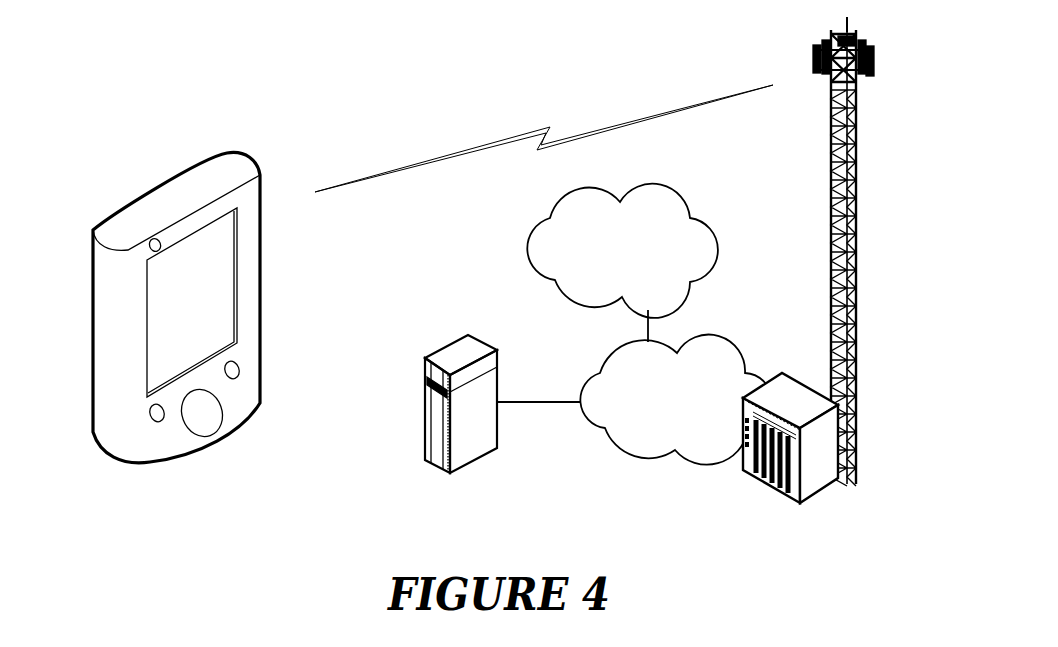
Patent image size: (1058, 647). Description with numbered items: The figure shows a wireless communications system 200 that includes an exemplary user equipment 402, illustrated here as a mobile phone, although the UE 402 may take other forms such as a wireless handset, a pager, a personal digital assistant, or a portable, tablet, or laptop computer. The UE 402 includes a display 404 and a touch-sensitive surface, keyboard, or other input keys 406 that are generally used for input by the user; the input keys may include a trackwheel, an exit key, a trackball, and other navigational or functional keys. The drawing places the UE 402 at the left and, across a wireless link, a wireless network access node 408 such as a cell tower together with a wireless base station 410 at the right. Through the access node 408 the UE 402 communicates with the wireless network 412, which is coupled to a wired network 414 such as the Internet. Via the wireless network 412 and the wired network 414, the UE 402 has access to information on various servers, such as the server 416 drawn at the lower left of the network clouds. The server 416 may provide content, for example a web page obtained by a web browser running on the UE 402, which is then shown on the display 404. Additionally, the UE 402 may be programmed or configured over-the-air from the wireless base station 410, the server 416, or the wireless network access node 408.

The communication system 200 is at (313, 110).
The user equipment 402 is at (175, 462).
The display 404 is at (262, 220).
The input keys 406 is at (263, 300).
The wireless network access node 408 is at (858, 475).
The wireless base station 410 is at (760, 483).
The wireless network 412 is at (676, 400).
The wired network 414 is at (622, 251).
The server 416 is at (462, 472).